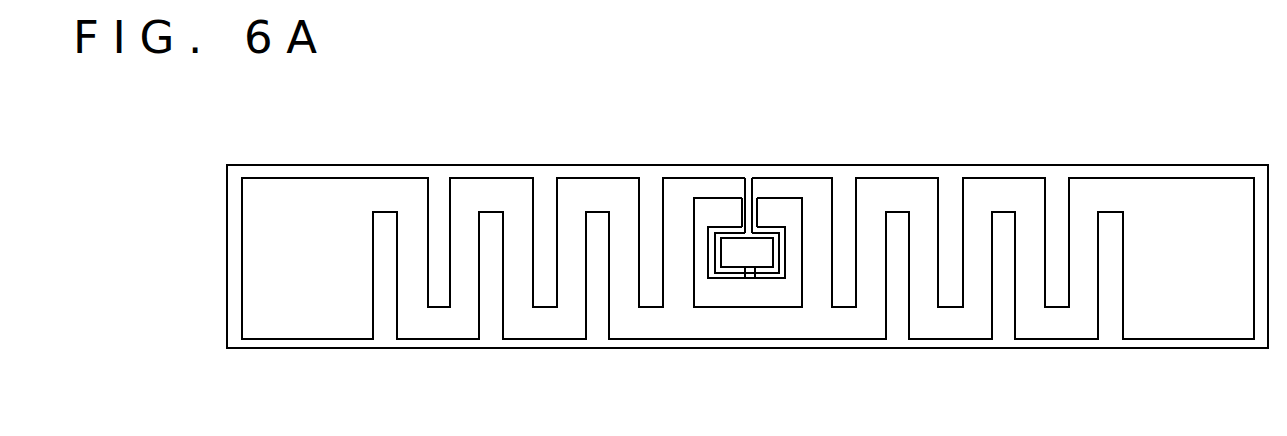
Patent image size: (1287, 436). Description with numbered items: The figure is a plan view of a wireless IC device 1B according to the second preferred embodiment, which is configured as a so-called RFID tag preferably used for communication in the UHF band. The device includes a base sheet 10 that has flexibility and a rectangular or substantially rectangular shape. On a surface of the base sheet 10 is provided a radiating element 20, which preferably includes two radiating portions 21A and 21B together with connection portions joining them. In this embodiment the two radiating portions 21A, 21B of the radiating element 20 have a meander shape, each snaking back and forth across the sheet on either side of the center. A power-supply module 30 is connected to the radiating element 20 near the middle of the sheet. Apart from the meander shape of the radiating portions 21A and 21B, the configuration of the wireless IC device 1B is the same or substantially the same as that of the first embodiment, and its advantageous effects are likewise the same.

The wireless IC device 1B is at (805, 65).
The base sheet 10 is at (860, 165).
The radiating element 20 is at (606, 195).
The radiating portion 21A is at (491, 186).
The radiating portion 21B is at (1017, 187).
The power-supply module 30 is at (763, 278).